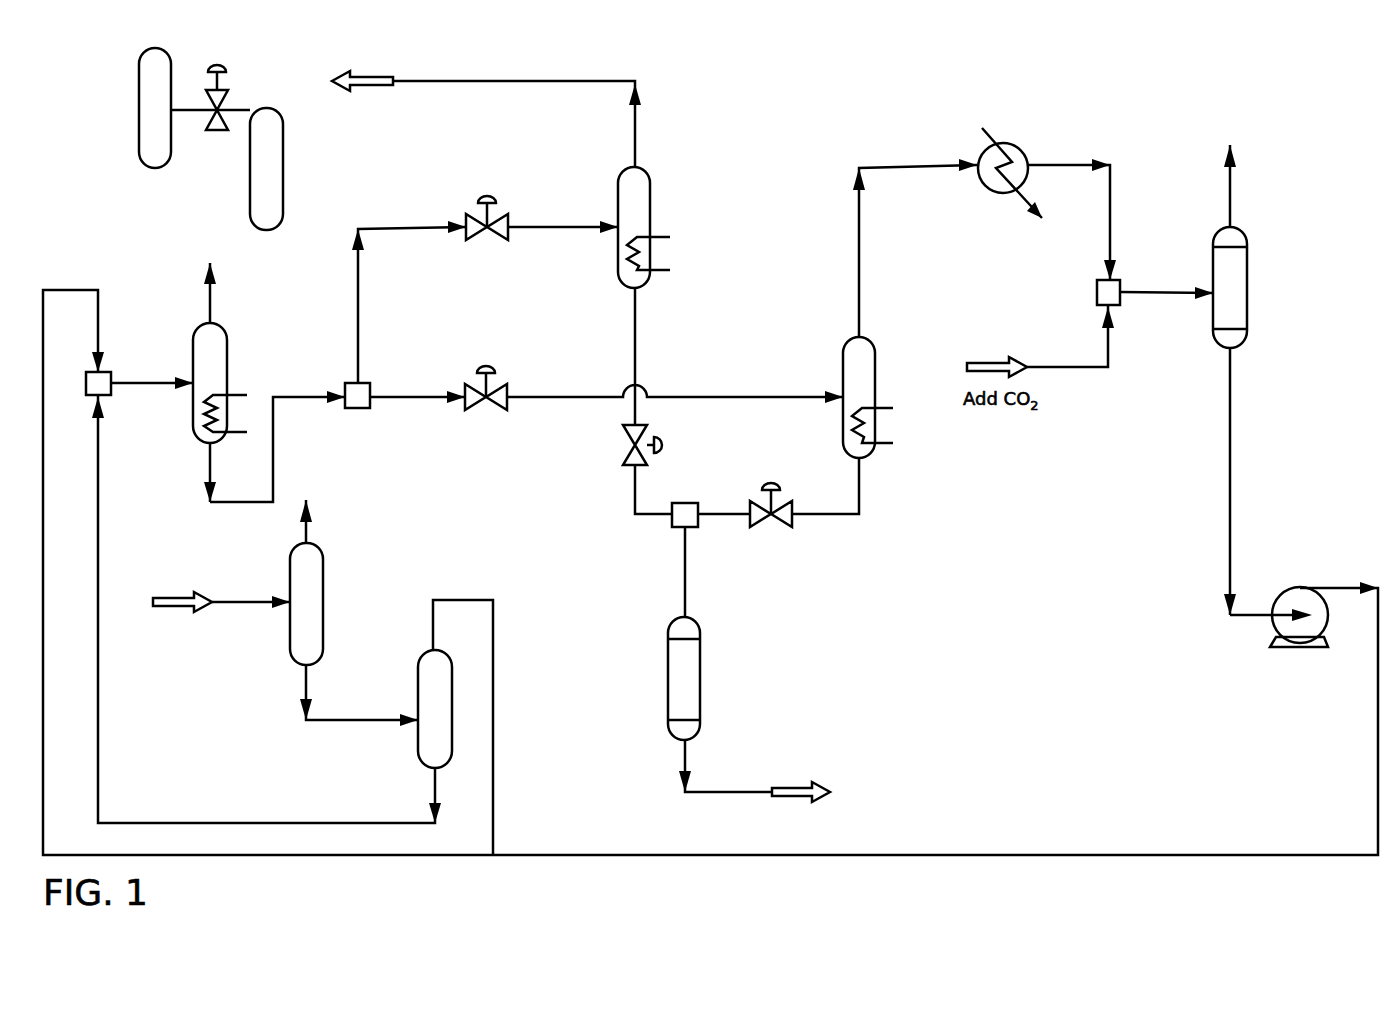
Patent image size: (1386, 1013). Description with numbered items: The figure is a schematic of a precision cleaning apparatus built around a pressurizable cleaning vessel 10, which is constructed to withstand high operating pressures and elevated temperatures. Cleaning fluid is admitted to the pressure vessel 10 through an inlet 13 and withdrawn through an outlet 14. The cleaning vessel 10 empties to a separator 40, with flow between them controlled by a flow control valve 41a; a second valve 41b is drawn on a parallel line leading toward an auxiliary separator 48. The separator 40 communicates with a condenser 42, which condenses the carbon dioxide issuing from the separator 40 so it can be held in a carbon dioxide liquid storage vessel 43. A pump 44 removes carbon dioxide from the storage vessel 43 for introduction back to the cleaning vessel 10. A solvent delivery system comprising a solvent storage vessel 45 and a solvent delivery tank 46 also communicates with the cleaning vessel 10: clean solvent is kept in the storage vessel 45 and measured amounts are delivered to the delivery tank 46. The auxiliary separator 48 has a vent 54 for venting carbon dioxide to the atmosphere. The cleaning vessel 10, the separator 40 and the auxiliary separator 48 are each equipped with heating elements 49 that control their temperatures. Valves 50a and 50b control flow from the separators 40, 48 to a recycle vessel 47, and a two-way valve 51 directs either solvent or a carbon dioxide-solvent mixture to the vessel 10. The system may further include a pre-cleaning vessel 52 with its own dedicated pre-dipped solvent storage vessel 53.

The pressurizable cleaning vessel 10 is at (224, 330).
The inlet 13 is at (156, 382).
The outlet 14 is at (276, 420).
The separator 40 is at (849, 343).
The flow control valve 41a is at (505, 385).
The valve 41b is at (506, 218).
The condenser 42 is at (987, 150).
The carbon dioxide liquid storage vessel 43 is at (1242, 243).
The pump 44 is at (1292, 590).
The solvent storage vessel 45 is at (318, 562).
The solvent delivery tank 46 is at (422, 675).
The recycle vessel 47 is at (700, 630).
The auxiliary separator 48 is at (640, 177).
The heating elements 49 is at (231, 433).
The valve 50a is at (765, 502).
The valve 50b is at (642, 433).
The two-way valve 51 is at (110, 392).
The pre-cleaning vessel 52 is at (278, 146).
The pre-dipped solvent storage vessel 53 is at (144, 62).
The vent 54 is at (567, 81).